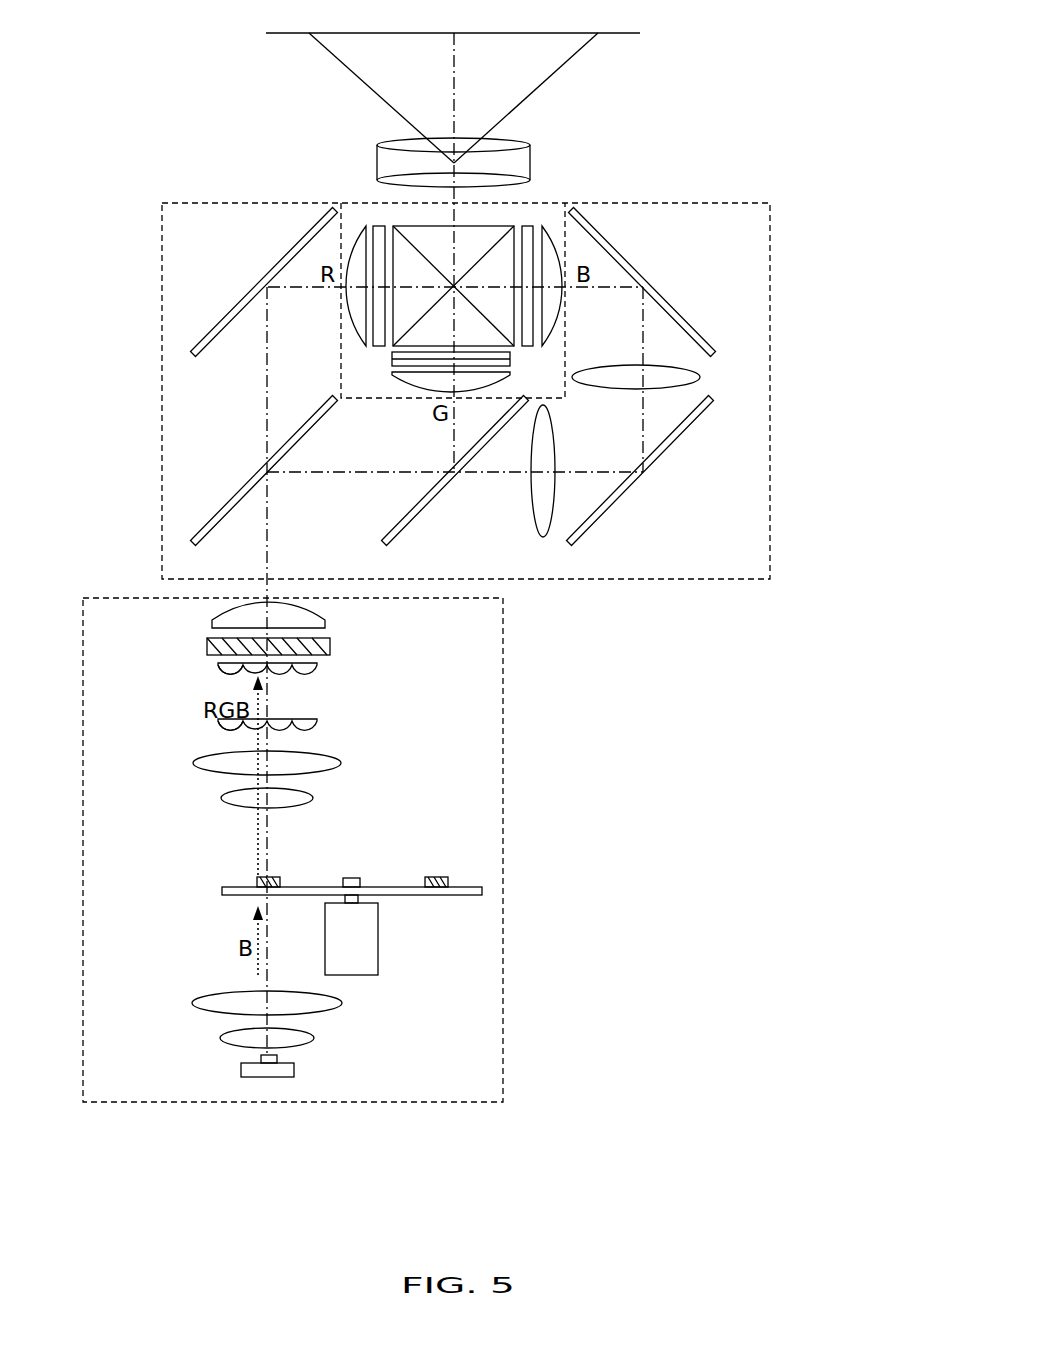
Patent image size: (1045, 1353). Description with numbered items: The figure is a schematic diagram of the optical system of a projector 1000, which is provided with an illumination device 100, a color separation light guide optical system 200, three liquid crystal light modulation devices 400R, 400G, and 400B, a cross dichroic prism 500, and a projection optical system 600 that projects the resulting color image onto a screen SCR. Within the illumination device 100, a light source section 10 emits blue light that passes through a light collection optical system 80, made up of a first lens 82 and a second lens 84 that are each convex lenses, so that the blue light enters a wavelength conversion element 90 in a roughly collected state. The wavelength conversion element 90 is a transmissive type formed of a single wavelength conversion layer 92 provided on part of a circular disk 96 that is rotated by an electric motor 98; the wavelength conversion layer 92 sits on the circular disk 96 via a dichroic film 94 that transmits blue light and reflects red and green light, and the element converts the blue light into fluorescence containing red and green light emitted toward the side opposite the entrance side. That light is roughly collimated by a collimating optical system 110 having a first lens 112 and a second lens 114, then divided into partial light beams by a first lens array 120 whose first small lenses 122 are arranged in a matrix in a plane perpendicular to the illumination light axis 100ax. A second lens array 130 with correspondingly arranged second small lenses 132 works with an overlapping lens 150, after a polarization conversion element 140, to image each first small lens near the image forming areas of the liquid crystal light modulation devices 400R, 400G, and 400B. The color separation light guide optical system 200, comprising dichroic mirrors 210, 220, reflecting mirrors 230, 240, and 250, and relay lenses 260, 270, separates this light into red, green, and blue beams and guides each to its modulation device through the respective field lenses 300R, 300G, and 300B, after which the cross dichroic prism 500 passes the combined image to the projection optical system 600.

The projector 1000 is at (821, 47).
The screen SCR is at (628, 35).
The projection optical system 600 is at (377, 163).
The cross dichroic prism 500 is at (495, 224).
The liquid crystal light modulation device 400R is at (379, 224).
The liquid crystal light modulation device 400G is at (392, 358).
The liquid crystal light modulation device 400B is at (533, 224).
The field lens 300R is at (362, 224).
The field lens 300G is at (392, 376).
The field lens 300B is at (545, 224).
The color separation light guide optical system 200 is at (162, 413).
The dichroic mirror 210 is at (200, 524).
The dichroic mirror 220 is at (413, 525).
The reflecting mirror 230 is at (205, 333).
The reflecting mirror 240 is at (600, 525).
The reflecting mirror 250 is at (700, 333).
The relay lens 260 is at (545, 537).
The relay lens 270 is at (702, 376).
The illumination device 100 is at (372, 1103).
The illumination light axis 100ax is at (267, 596).
The overlapping lens 150 is at (325, 625).
The polarization conversion element 140 is at (330, 645).
The second lens array 130 is at (317, 666).
The second small lens 132 is at (222, 670).
The first lens array 120 is at (317, 722).
The first small lens 122 is at (222, 724).
The collimating optical system 110 is at (214, 784).
The second lens 114 is at (195, 763).
The first lens 112 is at (222, 798).
The wavelength conversion element 90 is at (390, 900).
The wavelength conversion layer 92 is at (447, 879).
The dichroic film 94 is at (449, 884).
The circular disk 96 is at (482, 891).
The electric motor 98 is at (378, 930).
The light collection optical system 80 is at (320, 1015).
The second lens 84 is at (343, 1003).
The first lens 82 is at (315, 1037).
The light source section 10 is at (230, 1065).